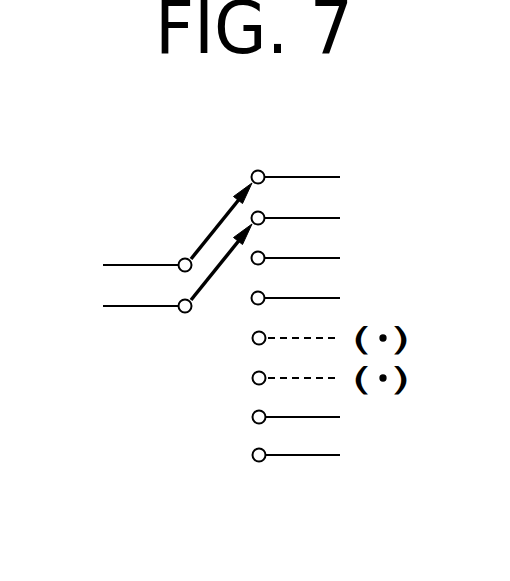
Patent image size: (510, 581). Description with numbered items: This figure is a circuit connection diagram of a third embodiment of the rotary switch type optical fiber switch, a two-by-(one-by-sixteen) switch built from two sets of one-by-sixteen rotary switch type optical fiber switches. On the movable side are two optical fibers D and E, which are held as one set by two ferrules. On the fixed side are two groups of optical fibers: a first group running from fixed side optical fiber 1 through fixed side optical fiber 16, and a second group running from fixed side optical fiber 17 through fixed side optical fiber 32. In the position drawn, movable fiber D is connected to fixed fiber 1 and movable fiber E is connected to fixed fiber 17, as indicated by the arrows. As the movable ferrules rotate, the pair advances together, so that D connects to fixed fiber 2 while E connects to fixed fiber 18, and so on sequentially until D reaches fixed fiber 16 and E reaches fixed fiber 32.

The movable side optical fiber D is at (126, 265).
The movable side optical fiber E is at (126, 305).
The fixed side optical fiber 1 is at (332, 178).
The fixed side optical fiber 17 is at (332, 219).
The fixed side optical fiber 2 is at (332, 259).
The fixed side optical fiber 18 is at (332, 299).
The fixed side optical fiber 16 is at (332, 418).
The fixed side optical fiber 32 is at (332, 456).